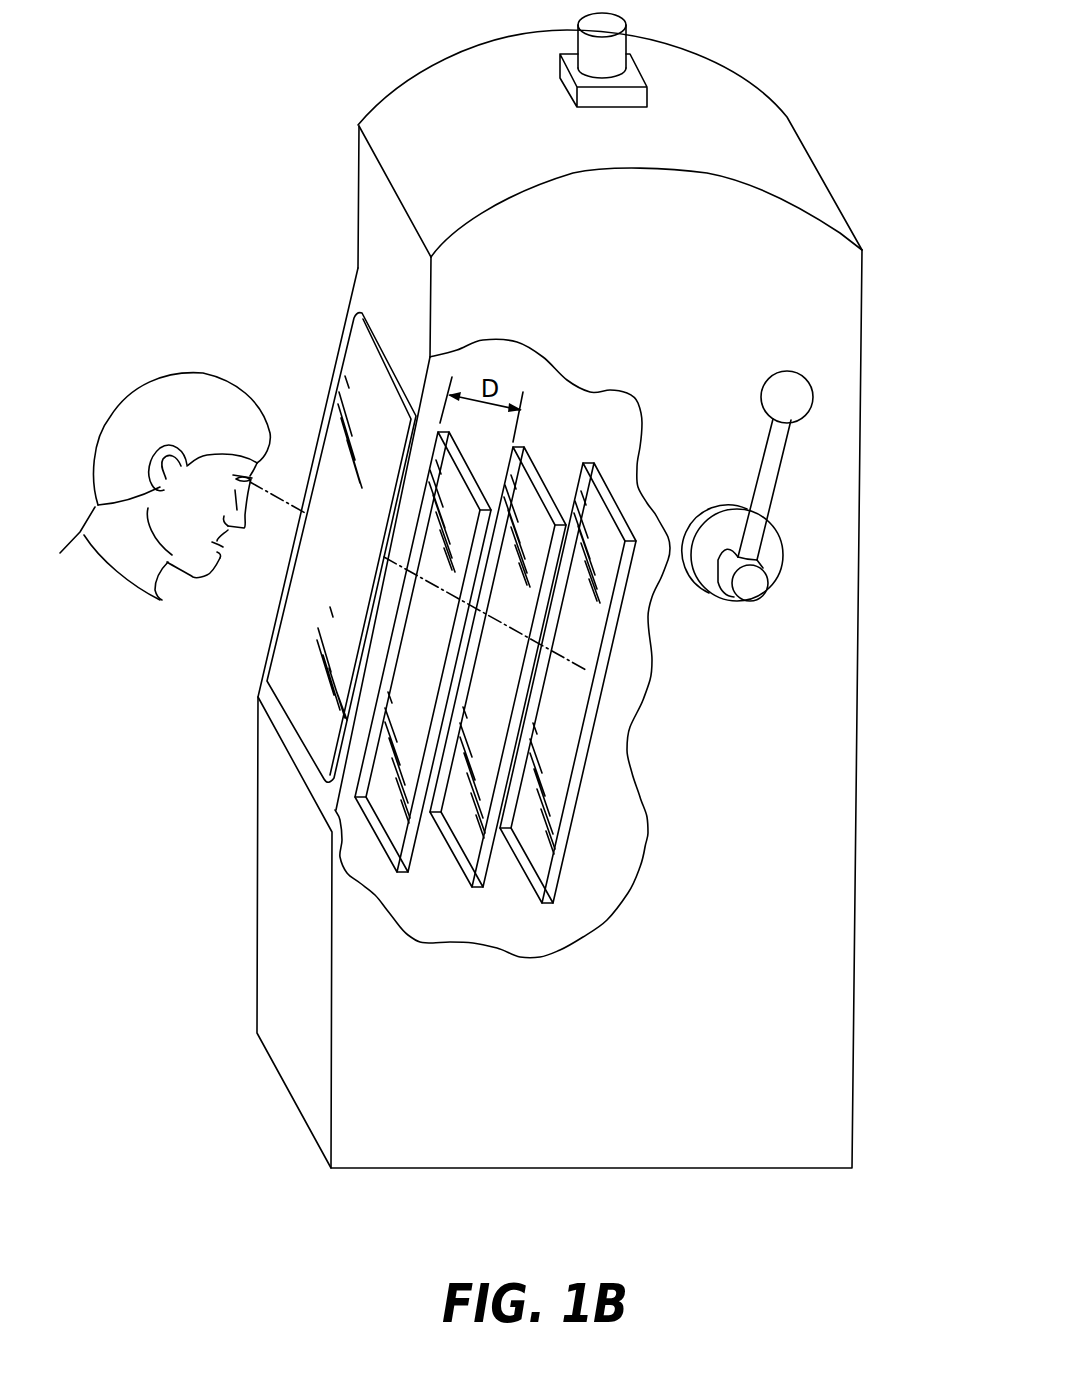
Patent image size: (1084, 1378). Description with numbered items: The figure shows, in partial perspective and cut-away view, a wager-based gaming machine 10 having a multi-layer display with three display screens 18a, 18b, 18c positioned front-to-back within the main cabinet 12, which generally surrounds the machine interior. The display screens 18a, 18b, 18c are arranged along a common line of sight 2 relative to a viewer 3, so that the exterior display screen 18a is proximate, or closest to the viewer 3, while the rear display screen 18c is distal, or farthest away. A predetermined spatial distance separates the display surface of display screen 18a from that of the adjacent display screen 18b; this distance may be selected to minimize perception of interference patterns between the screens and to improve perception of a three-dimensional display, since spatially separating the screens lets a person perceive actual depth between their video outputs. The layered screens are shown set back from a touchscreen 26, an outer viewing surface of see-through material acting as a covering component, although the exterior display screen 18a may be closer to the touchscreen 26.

The wager-based gaming machine 10 is at (817, 72).
The main cabinet 12 is at (860, 524).
The touchscreen 26 is at (298, 628).
The display screen 18a is at (403, 873).
The display screen 18b is at (477, 888).
The display screen 18c is at (548, 905).
The line of sight 2 is at (277, 493).
The viewer 3 is at (193, 378).